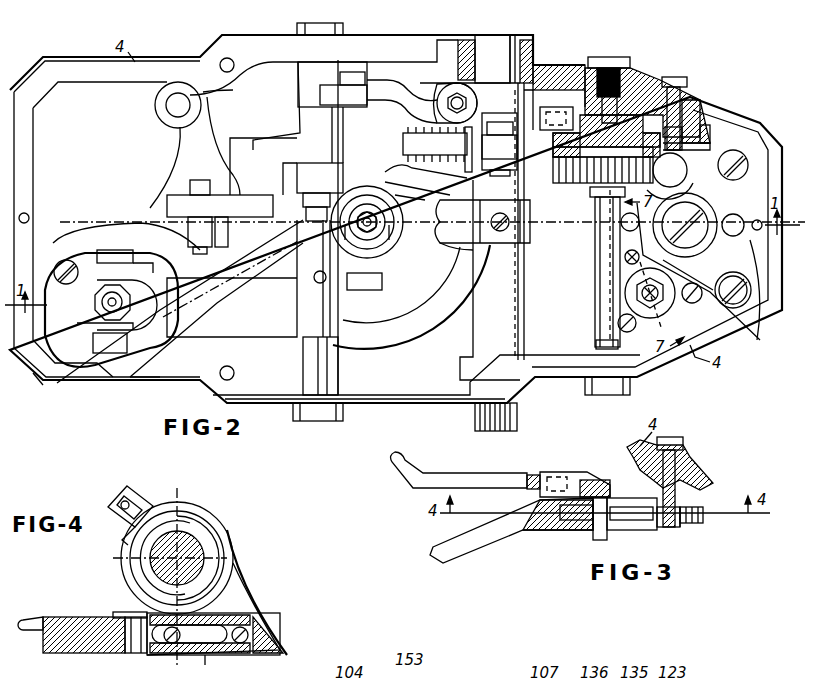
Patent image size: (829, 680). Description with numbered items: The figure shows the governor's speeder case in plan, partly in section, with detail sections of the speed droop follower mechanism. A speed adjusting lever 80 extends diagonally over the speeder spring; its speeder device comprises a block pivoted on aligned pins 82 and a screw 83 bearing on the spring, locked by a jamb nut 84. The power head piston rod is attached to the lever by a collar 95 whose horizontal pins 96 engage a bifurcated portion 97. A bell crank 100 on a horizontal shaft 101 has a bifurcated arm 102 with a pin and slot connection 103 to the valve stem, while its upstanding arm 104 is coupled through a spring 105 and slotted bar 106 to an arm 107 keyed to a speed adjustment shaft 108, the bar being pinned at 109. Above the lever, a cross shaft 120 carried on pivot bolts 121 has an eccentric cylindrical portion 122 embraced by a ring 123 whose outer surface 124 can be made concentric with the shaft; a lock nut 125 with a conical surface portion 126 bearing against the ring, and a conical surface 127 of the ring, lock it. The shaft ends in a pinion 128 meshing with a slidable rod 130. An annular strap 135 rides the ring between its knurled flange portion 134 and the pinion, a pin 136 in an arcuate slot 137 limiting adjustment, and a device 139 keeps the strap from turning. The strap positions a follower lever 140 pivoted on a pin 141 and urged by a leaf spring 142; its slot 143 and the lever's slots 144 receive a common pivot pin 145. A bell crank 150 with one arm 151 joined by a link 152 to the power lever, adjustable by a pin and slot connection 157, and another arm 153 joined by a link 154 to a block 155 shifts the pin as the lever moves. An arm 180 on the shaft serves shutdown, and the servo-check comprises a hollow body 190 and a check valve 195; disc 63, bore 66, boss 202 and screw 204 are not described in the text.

In FIG. 2, the disc 63 is at (392, 348).
In FIG. 2, the bore 66 is at (705, 238).
In FIG. 2, the speed adjusting lever 80 is at (180, 301).
In FIG. 3, the speed adjusting lever 80 is at (473, 543).
In FIG. 4, the speed adjusting lever 80 is at (80, 653).
In FIG. 2, the aligned pins 82 is at (430, 178).
In FIG. 2, the screw 83 is at (416, 198).
In FIG. 2, the jamb nut 84 is at (385, 245).
In FIG. 2, the collar 95 is at (95, 300).
In FIG. 2, the aligned horizontal pins 96 is at (88, 248).
In FIG. 2, the bifurcated portion 97 is at (100, 353).
In FIG. 2, the bell crank 100 is at (325, 292).
In FIG. 2, the horizontal shaft 101 is at (308, 350).
In FIG. 2, the bifurcated arm 102 is at (175, 342).
In FIG. 2, the pin and slot connection 103 is at (37, 388).
In FIG. 2, the upstanding arm 104 is at (325, 180).
In FIG. 2, the spring 105 is at (438, 112).
In FIG. 2, the slotted bar 106 is at (435, 144).
In FIG. 2, the arm 107 is at (520, 83).
In FIG. 2, the speed adjustment shaft 108 is at (490, 42).
In FIG. 2, the pivot pin 109 is at (527, 95).
In FIG. 2, the horizontal cross shaft 120 is at (595, 333).
In FIG. 2, the pivot bolts 121 is at (628, 60).
In FIG. 2, the eccentric cylindrical portion 122 is at (588, 188).
In FIG. 4, the eccentric cylindrical portion 122 is at (213, 547).
In FIG. 2, the ring 123 is at (683, 90).
In FIG. 4, the ring 123 is at (233, 540).
In FIG. 4, the cylindrical outer surface 124 is at (207, 513).
In FIG. 2, the lock nut 125 is at (592, 57).
In FIG. 2, the conical surface portion 126 is at (645, 95).
In FIG. 2, the conical surface 127 is at (565, 183).
In FIG. 2, the pinion 128 is at (525, 225).
In FIG. 2, the rod 130 is at (705, 183).
In FIG. 2, the flange portion 134 is at (545, 135).
In FIG. 2, the annular strap 135 is at (715, 118).
In FIG. 4, the annular strap 135 is at (127, 548).
In FIG. 4, the pin 136 is at (182, 520).
In FIG. 4, the arcuate slot 137 is at (133, 567).
In FIG. 4, the device 139 is at (120, 497).
In FIG. 2, the follower lever 140 is at (722, 128).
In FIG. 3, the follower lever 140 is at (680, 527).
In FIG. 4, the follower lever 140 is at (260, 600).
In FIG. 2, the pin 141 is at (703, 110).
In FIG. 3, the pin 141 is at (675, 477).
In FIG. 4, the pin 141 is at (267, 627).
In FIG. 3, the leaf spring 142 is at (690, 510).
In FIG. 4, the leaf spring 142 is at (247, 575).
In FIG. 3, the slot 143 is at (613, 500).
In FIG. 4, the slot 143 is at (210, 655).
In FIG. 3, the slots 144 is at (620, 530).
In FIG. 3, the common pivot pin 145 is at (580, 530).
In FIG. 4, the common pivot pin 145 is at (160, 655).
In FIG. 2, the bell crank 150 is at (295, 120).
In FIG. 2, the arm 151 is at (225, 195).
In FIG. 2, the link 152 is at (188, 225).
In FIG. 2, the arm 153 is at (335, 80).
In FIG. 3, the arm 153 is at (598, 459).
In FIG. 2, the link 154 is at (395, 95).
In FIG. 3, the link 154 is at (495, 480).
In FIG. 4, the link 154 is at (35, 618).
In FIG. 2, the block 155 is at (585, 60).
In FIG. 4, the block 155 is at (117, 612).
In FIG. 2, the pin and slot connection 157 is at (172, 180).
In FIG. 2, the arm 180 is at (480, 252).
In FIG. 2, the hollow body 190 is at (678, 264).
In FIG. 2, the check valve 195 is at (765, 301).
In FIG. 2, the boss 202 is at (625, 294).
In FIG. 2, the screw 204 is at (625, 255).